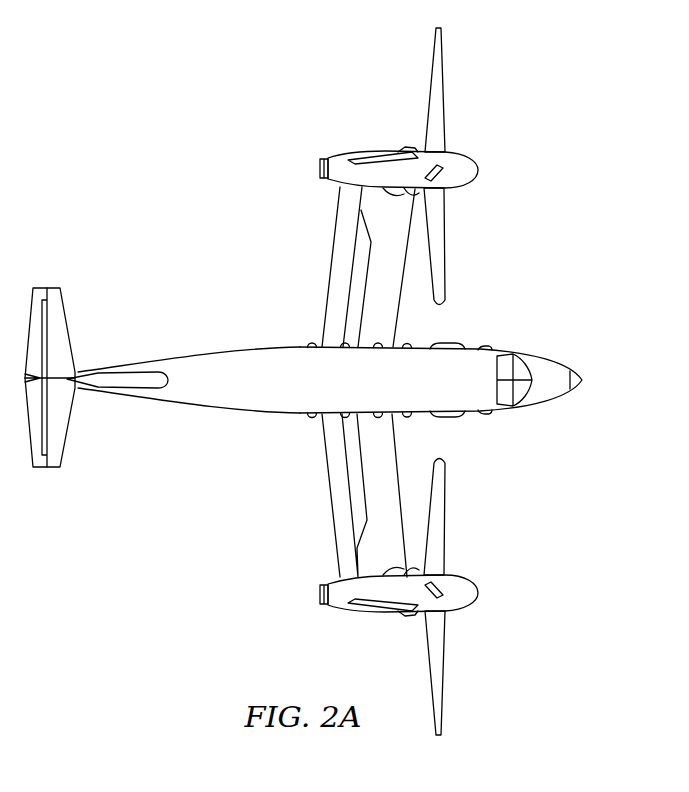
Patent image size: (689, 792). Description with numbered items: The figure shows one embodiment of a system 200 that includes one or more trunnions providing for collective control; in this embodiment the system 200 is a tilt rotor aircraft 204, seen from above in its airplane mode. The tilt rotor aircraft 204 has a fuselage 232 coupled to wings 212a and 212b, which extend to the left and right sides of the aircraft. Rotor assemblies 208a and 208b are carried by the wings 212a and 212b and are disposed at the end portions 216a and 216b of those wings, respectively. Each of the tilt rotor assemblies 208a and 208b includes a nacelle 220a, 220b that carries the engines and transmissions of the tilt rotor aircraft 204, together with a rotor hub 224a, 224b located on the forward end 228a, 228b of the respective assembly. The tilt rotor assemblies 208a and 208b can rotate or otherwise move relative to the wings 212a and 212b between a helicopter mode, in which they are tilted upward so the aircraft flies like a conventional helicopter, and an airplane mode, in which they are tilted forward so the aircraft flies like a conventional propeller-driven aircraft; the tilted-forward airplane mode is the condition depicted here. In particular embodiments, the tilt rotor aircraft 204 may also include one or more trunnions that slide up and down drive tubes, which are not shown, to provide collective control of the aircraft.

The system 200 is at (180, 303).
The tilt rotor aircraft 204 is at (543, 355).
The rotor assembly 208a is at (338, 133).
The rotor assembly 208b is at (330, 630).
The wing 212a is at (333, 257).
The wing 212b is at (331, 503).
The end portion 216a is at (337, 189).
The end portion 216b is at (333, 575).
The nacelle 220a is at (338, 156).
The nacelle 220b is at (330, 608).
The rotor hub 224a is at (457, 158).
The rotor hub 224b is at (456, 608).
The forward end 228a is at (430, 197).
The forward end 228b is at (426, 569).
The fuselage 232 is at (229, 413).